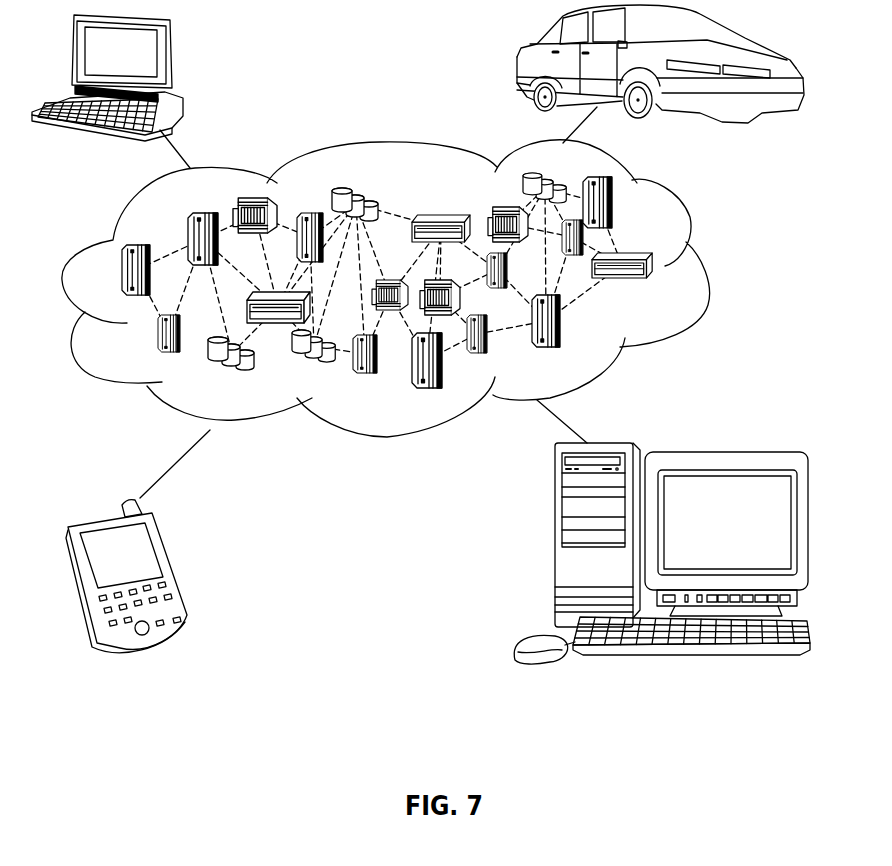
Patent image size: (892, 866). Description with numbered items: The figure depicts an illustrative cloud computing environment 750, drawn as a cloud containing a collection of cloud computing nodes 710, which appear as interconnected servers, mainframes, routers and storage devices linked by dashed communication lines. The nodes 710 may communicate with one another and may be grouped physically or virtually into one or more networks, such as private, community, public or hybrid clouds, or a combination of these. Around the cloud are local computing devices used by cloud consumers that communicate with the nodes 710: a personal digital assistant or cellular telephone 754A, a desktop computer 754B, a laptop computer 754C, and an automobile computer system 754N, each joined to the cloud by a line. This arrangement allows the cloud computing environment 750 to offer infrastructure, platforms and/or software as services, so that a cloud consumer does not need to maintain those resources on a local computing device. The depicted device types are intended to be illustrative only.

The cloud computing nodes 710 is at (670, 285).
The cloud computing environment 750 is at (690, 232).
The personal digital assistant or cellular telephone 754A is at (172, 565).
The desktop computer 754B is at (557, 543).
The laptop computer 754C is at (173, 58).
The automobile computer system 754N is at (532, 58).